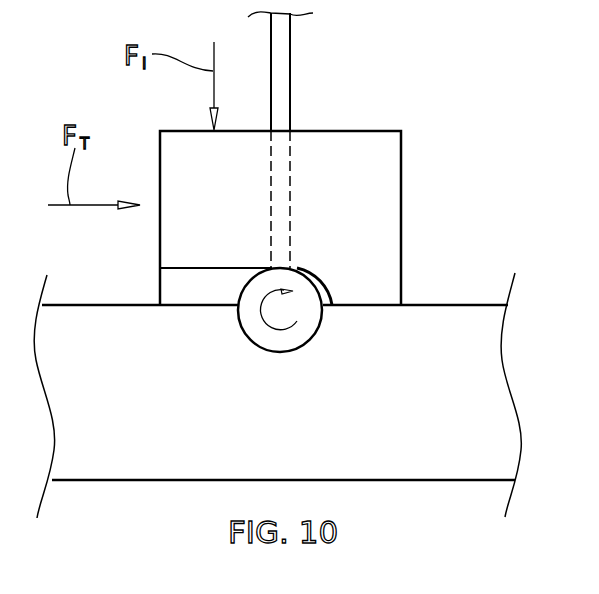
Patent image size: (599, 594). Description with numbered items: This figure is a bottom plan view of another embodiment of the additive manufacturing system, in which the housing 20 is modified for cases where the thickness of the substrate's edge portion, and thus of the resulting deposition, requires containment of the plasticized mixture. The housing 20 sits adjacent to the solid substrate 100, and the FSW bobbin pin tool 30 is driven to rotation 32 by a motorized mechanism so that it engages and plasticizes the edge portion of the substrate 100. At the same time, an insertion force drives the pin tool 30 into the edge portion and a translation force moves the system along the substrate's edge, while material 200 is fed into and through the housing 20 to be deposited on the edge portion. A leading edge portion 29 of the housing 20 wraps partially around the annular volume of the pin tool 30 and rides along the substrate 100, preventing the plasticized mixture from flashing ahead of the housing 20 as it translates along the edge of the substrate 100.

The substrate 100 is at (458, 452).
The material 200 is at (280, 55).
The housing 20 is at (402, 173).
The leading edge portion 29 is at (372, 291).
The pin tool 30 is at (255, 347).
The rotation 32 is at (263, 315).